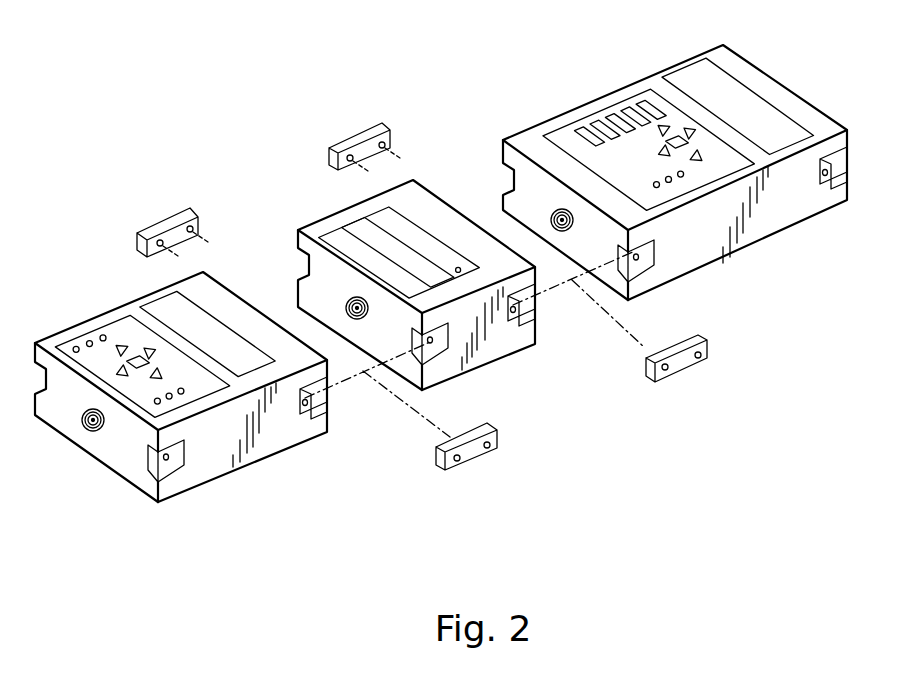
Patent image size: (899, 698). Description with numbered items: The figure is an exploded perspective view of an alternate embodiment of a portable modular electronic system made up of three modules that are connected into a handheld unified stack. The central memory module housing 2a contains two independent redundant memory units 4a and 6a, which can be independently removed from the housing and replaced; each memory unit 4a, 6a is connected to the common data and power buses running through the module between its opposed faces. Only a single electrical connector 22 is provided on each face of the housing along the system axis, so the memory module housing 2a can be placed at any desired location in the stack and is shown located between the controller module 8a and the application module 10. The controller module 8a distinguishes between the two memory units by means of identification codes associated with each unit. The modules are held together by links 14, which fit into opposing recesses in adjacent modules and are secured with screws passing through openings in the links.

The memory module housing 2a is at (495, 337).
The memory unit 4a is at (332, 238).
The memory unit 6a is at (362, 223).
The controller module 8a is at (212, 453).
The application module 10 is at (695, 248).
The link 14 is at (163, 220).
The electrical connector 22 is at (82, 415).